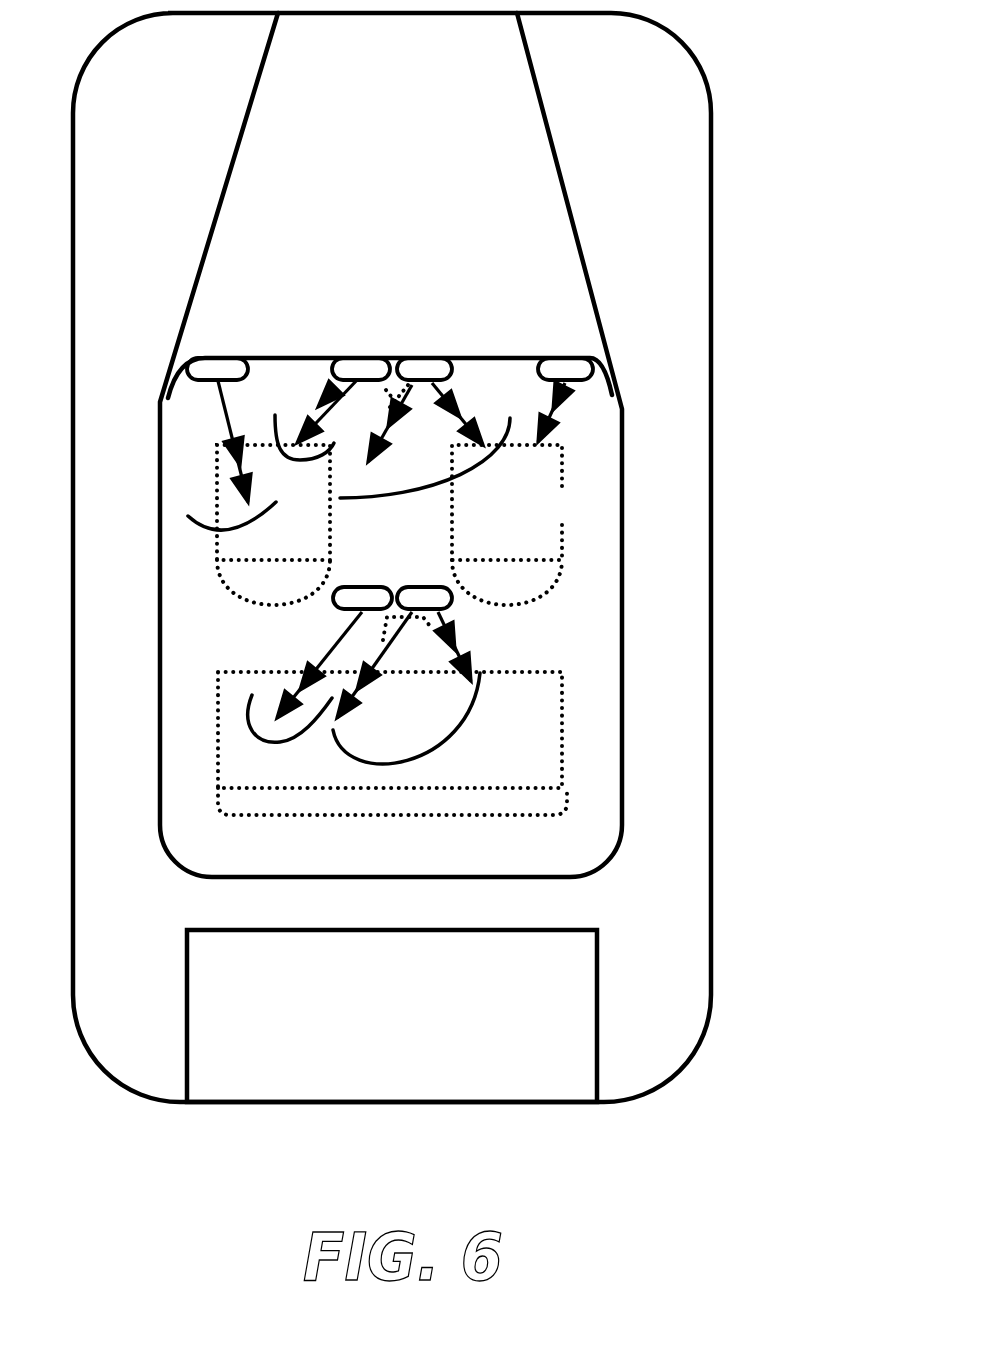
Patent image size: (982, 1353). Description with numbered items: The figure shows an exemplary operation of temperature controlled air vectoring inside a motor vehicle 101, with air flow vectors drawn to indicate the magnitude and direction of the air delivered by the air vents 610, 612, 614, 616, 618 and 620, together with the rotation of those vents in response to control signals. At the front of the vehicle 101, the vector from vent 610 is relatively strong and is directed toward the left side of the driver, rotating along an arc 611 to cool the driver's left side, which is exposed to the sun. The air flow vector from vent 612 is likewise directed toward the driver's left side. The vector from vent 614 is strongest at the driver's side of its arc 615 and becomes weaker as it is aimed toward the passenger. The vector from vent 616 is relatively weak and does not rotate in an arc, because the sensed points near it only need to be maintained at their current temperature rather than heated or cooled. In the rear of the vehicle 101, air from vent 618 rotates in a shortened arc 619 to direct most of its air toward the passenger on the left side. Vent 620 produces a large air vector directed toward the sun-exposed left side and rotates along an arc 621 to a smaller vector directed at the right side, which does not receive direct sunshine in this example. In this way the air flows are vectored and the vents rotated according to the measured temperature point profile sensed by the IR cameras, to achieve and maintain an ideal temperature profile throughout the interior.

The motor vehicle 101 is at (713, 280).
The air vent 610 is at (233, 357).
The arc 611 is at (218, 537).
The air vent 612 is at (362, 357).
The air vent 614 is at (410, 357).
The arc 615 is at (478, 468).
The air vent 616 is at (567, 357).
The air vent 618 is at (362, 587).
The arc 619 is at (277, 745).
The air vent 620 is at (422, 587).
The arc 621 is at (470, 717).